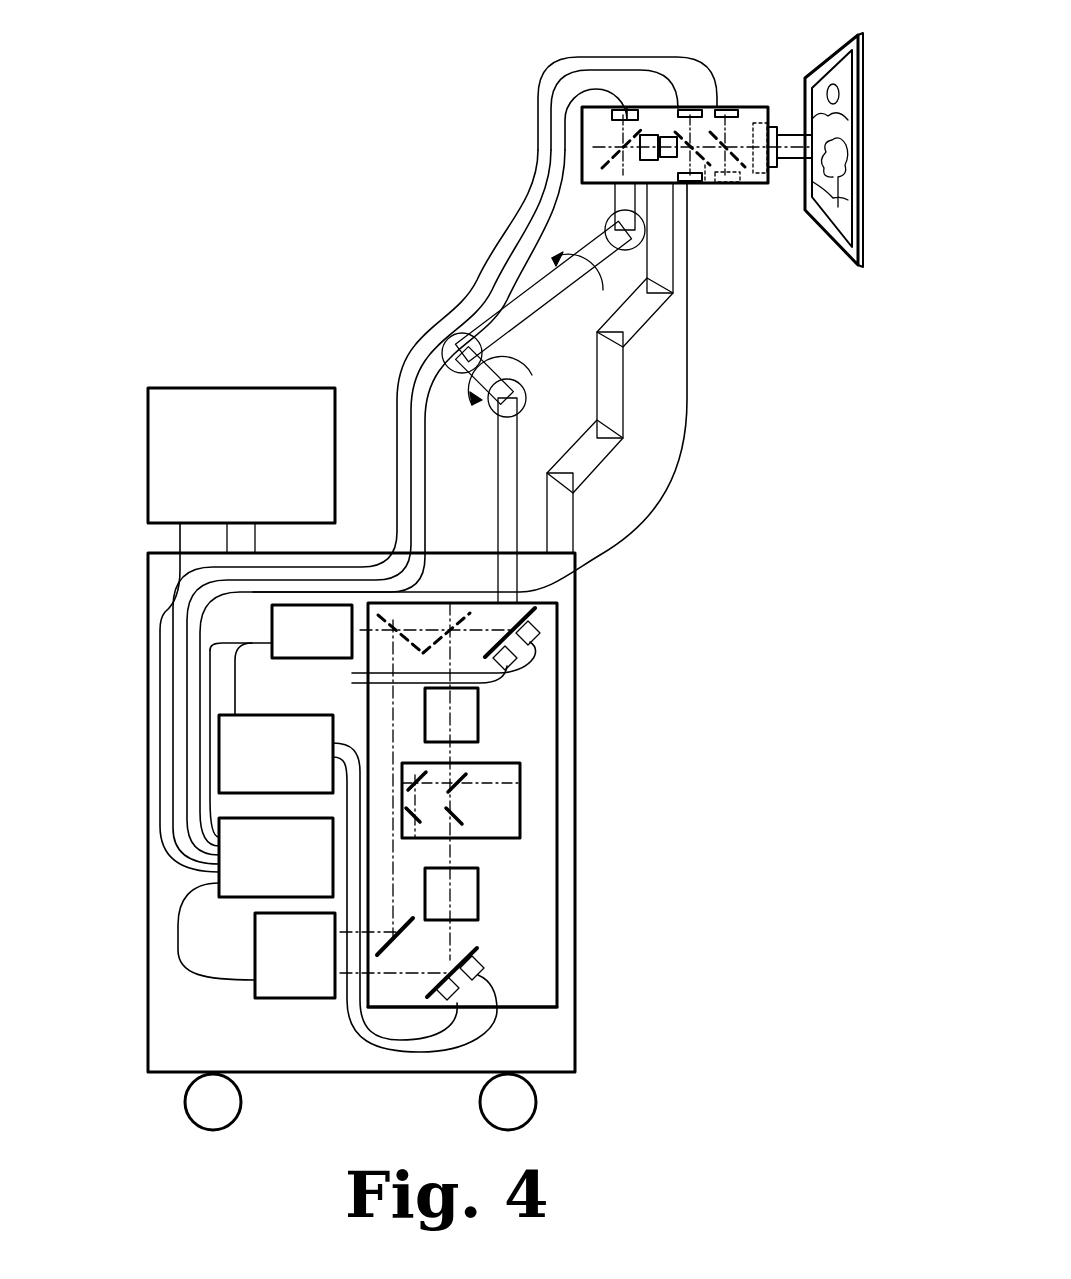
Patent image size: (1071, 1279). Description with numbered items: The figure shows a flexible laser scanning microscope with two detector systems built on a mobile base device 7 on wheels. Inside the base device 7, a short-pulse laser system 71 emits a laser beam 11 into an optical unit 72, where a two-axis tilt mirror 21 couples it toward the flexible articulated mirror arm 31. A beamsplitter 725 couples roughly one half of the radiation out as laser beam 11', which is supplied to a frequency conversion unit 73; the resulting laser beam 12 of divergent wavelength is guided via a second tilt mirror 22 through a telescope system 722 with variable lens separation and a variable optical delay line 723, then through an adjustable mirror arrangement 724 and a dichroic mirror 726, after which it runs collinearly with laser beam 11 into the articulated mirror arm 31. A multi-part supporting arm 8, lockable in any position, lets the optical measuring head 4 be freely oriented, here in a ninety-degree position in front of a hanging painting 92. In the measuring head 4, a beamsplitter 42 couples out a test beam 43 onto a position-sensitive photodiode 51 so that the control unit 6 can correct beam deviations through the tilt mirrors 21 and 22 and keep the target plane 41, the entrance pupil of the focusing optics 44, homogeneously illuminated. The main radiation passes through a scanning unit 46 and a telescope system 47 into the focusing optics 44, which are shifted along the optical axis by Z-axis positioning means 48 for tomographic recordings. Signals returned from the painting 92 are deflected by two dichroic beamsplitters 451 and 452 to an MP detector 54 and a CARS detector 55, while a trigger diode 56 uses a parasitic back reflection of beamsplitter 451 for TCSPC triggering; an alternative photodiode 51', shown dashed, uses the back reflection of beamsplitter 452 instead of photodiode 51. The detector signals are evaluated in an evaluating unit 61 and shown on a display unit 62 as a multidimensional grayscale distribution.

The optical measuring head 4 is at (590, 108).
The target plane 41 is at (808, 80).
The beamsplitter 42 is at (640, 150).
The test beam 43 is at (618, 135).
The focusing optics 44 is at (777, 157).
The dichroic beamsplitter 451 is at (703, 183).
The dichroic beamsplitter 452 is at (756, 125).
The scanning unit 46 is at (645, 158).
The telescope system 47 is at (667, 140).
The Z-axis positioning means 48 is at (795, 160).
The position-sensitive photodiode 51 is at (589, 63).
The photodiode 51' is at (747, 201).
The MP detector 54 is at (695, 110).
The CARS detector 55 is at (727, 110).
The trigger diode 56 is at (695, 183).
The articulated mirror arm 31 is at (487, 323).
The supporting arm 8 is at (617, 392).
The display unit 62 is at (222, 395).
The mobile base device 7 is at (148, 572).
The laser beam 11 is at (448, 743).
The laser beam 11' is at (548, 780).
The beamsplitter 725 is at (392, 618).
The dichroic mirror 726 is at (462, 628).
The two-axis tilt mirror 21 is at (537, 612).
The adjustable mirror arrangement 724 is at (473, 717).
The variable optical delay line 723 is at (517, 790).
The telescope system 722 is at (478, 895).
The laser beam 12 is at (450, 935).
The second tilt mirror 22 is at (477, 955).
The optical unit 72 is at (547, 1008).
The control unit 6 is at (219, 758).
The short-pulse laser system 71 is at (302, 647).
The evaluating unit 61 is at (218, 898).
The frequency conversion unit 73 is at (283, 990).
The painting 92 is at (832, 247).